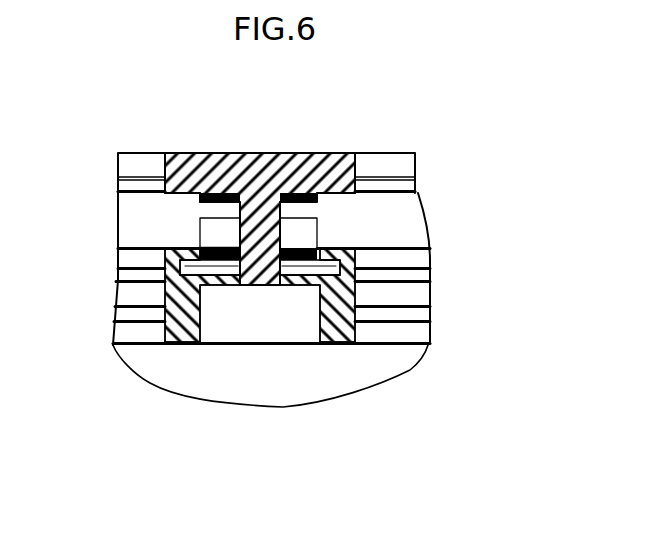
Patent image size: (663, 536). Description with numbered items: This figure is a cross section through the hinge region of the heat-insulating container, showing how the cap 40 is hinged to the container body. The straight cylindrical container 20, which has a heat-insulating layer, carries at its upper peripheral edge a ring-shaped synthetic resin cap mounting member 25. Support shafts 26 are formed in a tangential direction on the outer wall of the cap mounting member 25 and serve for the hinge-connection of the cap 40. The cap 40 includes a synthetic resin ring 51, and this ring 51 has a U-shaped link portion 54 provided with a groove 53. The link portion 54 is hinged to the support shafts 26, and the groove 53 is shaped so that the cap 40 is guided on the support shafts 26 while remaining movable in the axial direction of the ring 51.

The cylindrical container 20 is at (305, 387).
The cap mounting member 25 is at (433, 292).
The support shafts 26 is at (308, 255).
The cap 40 is at (363, 149).
The ring 51 is at (262, 158).
The groove 53 is at (303, 235).
The U-shaped link portion 54 is at (236, 242).